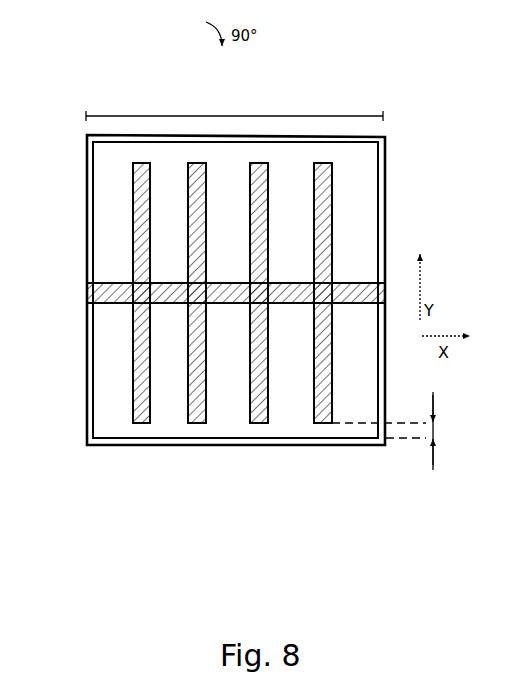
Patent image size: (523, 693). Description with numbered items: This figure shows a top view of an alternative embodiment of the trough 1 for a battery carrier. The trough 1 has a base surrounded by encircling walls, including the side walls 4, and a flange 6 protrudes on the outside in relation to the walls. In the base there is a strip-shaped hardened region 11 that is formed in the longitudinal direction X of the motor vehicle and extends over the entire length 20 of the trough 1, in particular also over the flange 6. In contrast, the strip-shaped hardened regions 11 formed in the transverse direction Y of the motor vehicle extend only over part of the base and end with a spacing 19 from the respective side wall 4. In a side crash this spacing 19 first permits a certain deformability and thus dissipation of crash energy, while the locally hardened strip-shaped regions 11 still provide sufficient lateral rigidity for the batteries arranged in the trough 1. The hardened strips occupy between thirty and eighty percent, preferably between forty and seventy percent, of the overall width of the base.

The trough 1 is at (86, 201).
The side wall 4 is at (132, 432).
The flange 6 is at (377, 187).
The strip-shaped hardened region 11 is at (360, 283).
The spacing 19 is at (394, 431).
The length 20 is at (234, 109).